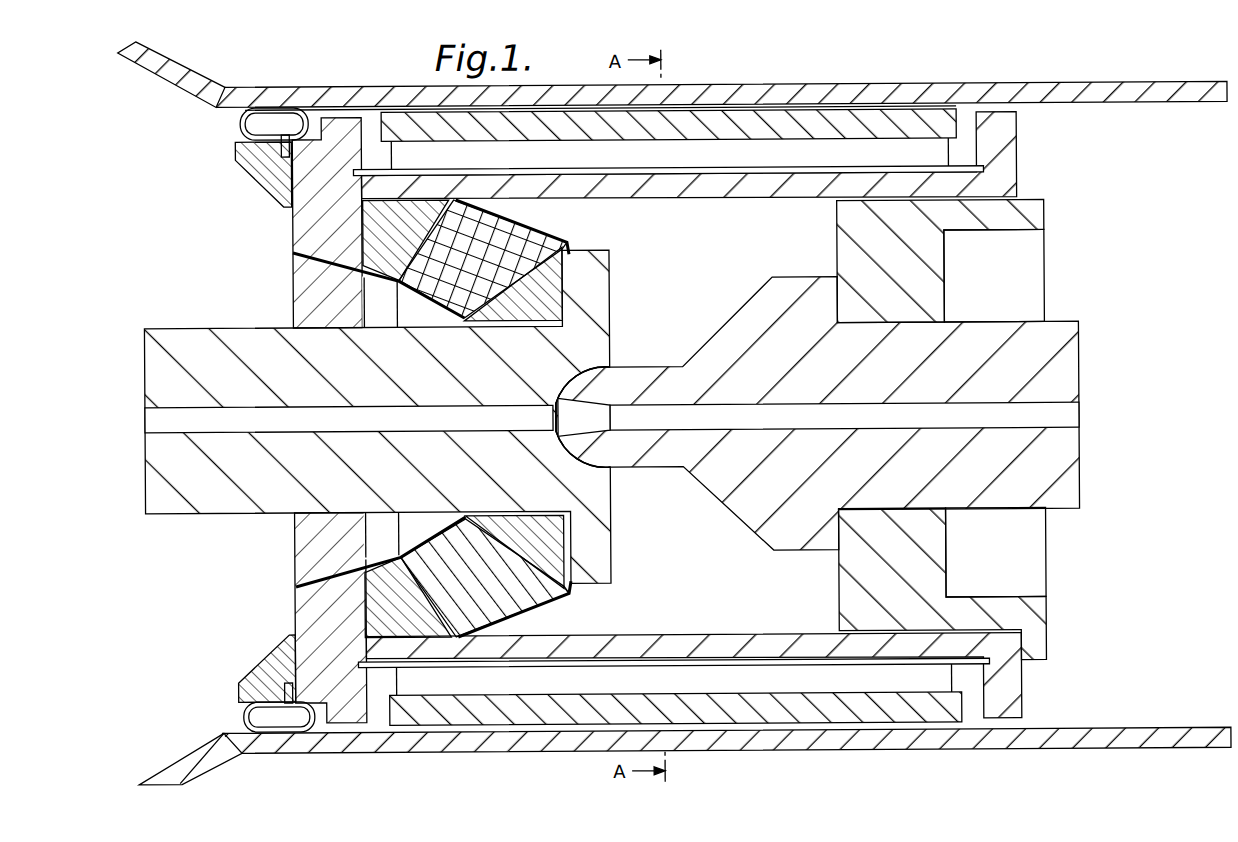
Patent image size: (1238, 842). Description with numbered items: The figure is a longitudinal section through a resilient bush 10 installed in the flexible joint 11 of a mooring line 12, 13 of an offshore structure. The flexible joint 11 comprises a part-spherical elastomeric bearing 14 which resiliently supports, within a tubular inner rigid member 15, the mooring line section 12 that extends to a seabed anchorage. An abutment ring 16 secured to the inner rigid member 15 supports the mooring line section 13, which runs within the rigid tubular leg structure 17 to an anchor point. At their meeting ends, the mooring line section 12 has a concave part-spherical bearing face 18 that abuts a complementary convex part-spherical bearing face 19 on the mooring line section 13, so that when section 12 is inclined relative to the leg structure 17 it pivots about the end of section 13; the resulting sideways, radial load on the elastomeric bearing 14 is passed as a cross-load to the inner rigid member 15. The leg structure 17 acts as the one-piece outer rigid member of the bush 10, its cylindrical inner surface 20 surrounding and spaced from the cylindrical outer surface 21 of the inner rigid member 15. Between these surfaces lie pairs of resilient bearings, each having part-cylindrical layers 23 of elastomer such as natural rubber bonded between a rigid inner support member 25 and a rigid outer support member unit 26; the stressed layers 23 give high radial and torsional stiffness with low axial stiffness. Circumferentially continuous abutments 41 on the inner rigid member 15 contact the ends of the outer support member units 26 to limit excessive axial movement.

The resilient bush 10 is at (968, 124).
The flexible joint 11 is at (280, 605).
The mooring line section 12 is at (266, 512).
The mooring line section 13 is at (1030, 487).
The part-spherical elastomeric bearing 14 is at (540, 238).
The tubular inner rigid member 15 is at (318, 239).
The abutment ring 16 is at (925, 272).
The rigid tubular leg structure 17 is at (1130, 88).
The concave part-spherical bearing face 18 is at (612, 490).
The convex part-spherical bearing face 19 is at (592, 362).
The cylindrical shaped inner surface 20 is at (1166, 155).
The cylindrical outer surface 21 is at (665, 176).
The part-cylindrical shaped layer 23 is at (866, 150).
The rigid inner support member 25 is at (760, 180).
The rigid outer support member unit 26 is at (760, 125).
The abutment 41 is at (350, 128).